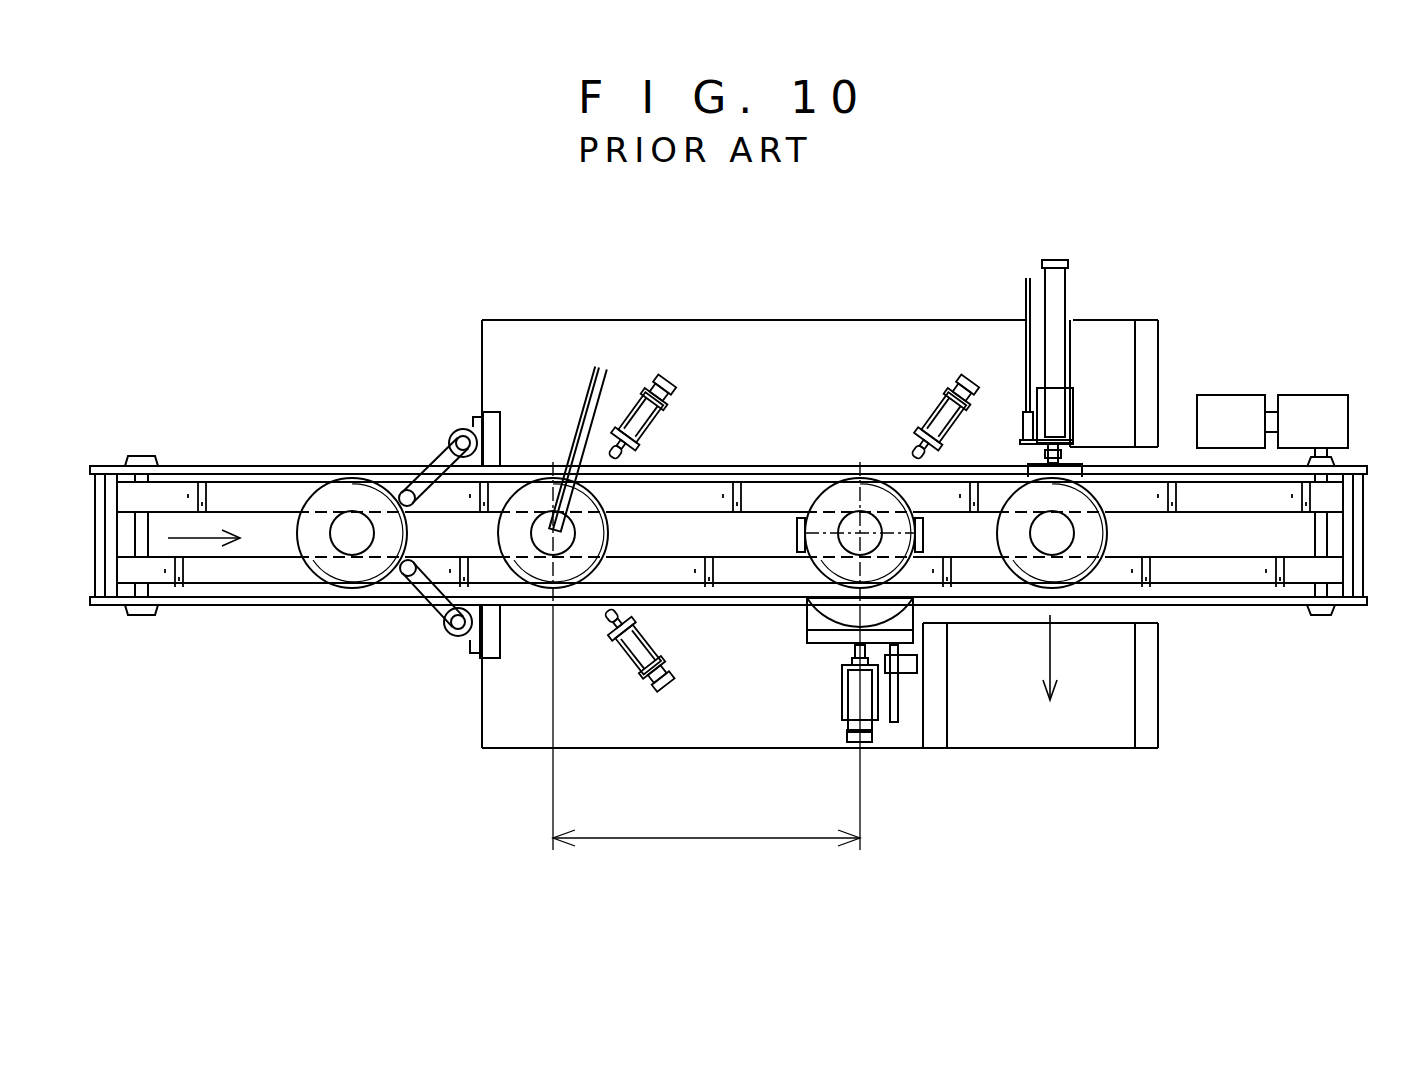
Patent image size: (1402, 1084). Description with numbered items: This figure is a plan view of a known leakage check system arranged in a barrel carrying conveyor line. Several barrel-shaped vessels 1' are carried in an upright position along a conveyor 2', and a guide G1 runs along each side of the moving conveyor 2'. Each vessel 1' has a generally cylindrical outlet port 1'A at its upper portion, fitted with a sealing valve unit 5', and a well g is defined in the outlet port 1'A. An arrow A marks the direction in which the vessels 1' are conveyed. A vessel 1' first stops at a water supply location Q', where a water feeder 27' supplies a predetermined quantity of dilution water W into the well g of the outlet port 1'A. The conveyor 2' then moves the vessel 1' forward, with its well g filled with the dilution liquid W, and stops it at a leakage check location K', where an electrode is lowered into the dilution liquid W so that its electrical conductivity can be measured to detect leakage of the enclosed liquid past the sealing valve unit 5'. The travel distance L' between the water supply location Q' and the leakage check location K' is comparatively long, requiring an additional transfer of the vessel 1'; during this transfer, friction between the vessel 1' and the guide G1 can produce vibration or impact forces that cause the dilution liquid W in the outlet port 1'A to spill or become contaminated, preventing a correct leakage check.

The conveyor 2' is at (730, 478).
The barrel-shaped vessel 1' is at (652, 579).
The outlet port 1'A is at (588, 584).
The sealing valve unit 5' is at (352, 595).
The well g is at (350, 520).
The conveying direction A is at (219, 539).
The dilution liquid W is at (548, 520).
The water feeder 27' is at (669, 450).
The guide G1 is at (792, 472).
The water supply location Q' is at (589, 727).
The leakage check location K' is at (911, 727).
The travel distance L' is at (706, 822).